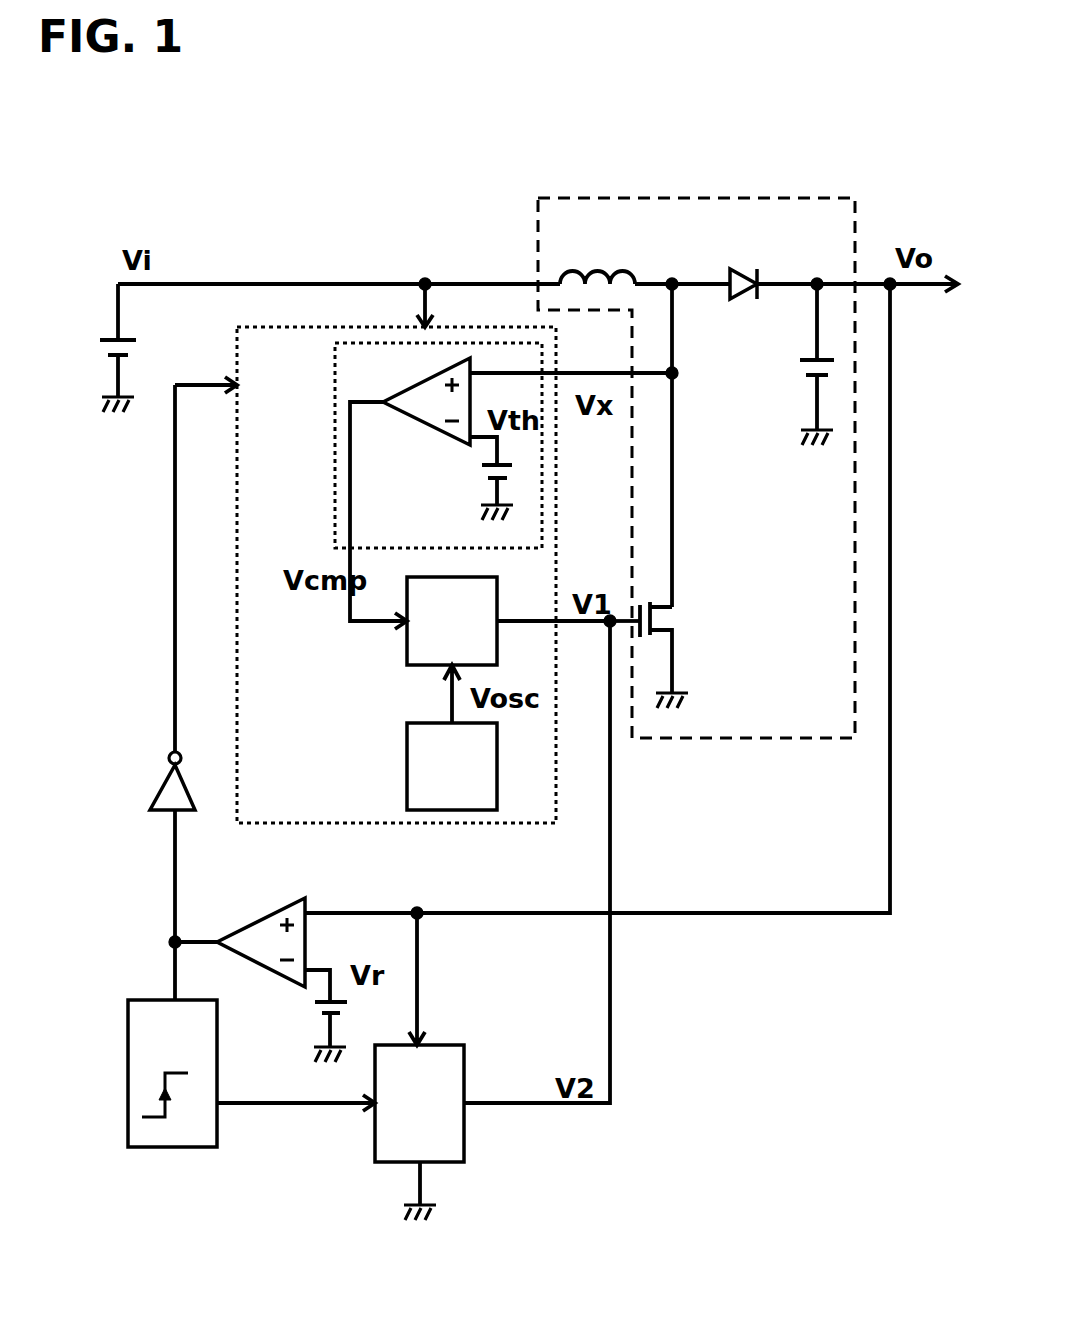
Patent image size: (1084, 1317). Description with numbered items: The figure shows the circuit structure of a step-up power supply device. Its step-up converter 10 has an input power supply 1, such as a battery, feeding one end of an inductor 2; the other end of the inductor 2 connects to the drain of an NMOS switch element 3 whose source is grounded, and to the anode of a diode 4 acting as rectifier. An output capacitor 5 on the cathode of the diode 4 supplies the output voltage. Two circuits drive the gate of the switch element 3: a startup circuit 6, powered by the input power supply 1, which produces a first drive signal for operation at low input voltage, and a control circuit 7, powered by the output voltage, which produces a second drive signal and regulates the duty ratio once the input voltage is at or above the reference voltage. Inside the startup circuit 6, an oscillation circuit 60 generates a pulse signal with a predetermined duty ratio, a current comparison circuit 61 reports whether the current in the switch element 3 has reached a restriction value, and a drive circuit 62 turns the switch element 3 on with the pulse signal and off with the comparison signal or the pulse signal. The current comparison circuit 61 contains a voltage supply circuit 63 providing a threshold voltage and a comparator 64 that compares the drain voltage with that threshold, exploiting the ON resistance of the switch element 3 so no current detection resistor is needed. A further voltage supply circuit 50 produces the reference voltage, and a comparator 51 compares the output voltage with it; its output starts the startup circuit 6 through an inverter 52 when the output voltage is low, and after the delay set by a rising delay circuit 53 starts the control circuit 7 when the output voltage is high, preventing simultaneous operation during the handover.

The input power supply 1 is at (137, 348).
The inductor 2 is at (615, 272).
The NMOS transistor (switch element) 3 is at (675, 625).
The diode (rectifier) 4 is at (752, 270).
The output capacitor 5 is at (800, 368).
The startup circuit 6 is at (320, 327).
The control circuit 7 is at (465, 1145).
The step-up converter 10 is at (820, 198).
The voltage supply circuit 50 is at (315, 1010).
The comparator 51 is at (240, 925).
The inverter 52 is at (155, 795).
The rising delay circuit 53 is at (155, 1000).
The oscillation circuit 60 is at (407, 753).
The current comparison circuit 61 is at (335, 440).
The drive circuit 62 is at (407, 645).
The voltage supply circuit 63 is at (478, 468).
The comparator 64 is at (420, 425).